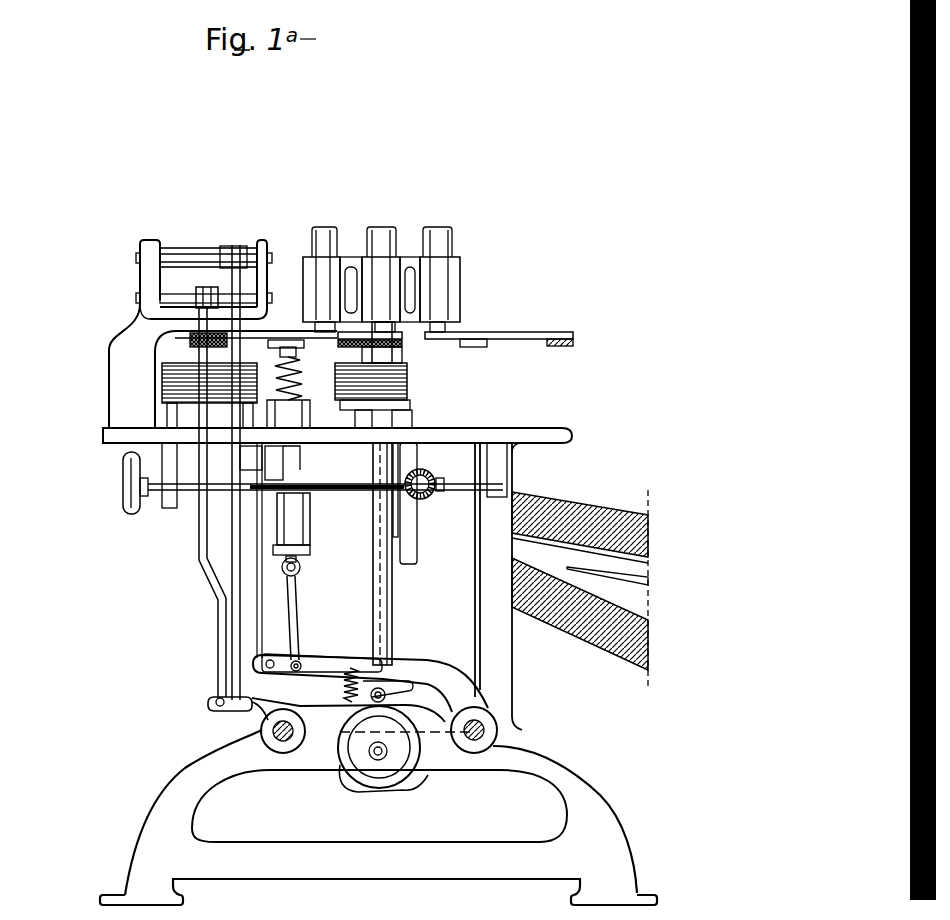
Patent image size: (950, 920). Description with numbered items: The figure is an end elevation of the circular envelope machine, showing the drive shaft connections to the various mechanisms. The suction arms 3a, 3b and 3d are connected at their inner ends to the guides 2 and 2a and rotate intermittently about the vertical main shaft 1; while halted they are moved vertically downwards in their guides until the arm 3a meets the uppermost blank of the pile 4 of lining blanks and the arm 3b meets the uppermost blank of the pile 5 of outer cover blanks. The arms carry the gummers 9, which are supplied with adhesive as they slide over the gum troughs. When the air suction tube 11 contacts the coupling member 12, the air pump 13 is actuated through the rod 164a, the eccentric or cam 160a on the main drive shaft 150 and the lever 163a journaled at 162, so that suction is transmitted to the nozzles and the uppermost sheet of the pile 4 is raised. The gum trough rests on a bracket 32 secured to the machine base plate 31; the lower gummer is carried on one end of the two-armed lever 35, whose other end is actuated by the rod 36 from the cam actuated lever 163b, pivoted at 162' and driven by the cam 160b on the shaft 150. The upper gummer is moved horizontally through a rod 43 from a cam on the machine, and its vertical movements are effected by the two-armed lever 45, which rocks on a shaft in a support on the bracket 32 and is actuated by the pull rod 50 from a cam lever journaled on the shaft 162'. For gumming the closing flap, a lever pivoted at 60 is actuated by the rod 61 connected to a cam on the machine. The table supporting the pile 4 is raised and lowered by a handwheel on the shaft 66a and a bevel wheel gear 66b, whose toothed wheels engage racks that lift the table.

The vertical main shaft 1 is at (393, 597).
The guide 2 is at (322, 329).
The guide 2a is at (324, 228).
The suction arm 3a is at (402, 338).
The suction arm 3b is at (262, 333).
The suction arm 3d is at (525, 325).
The pile of lining blanks 4 is at (410, 385).
The pile of outer cover blanks 5 is at (172, 366).
The gummer 9 is at (220, 346).
The air suction tube 11 is at (300, 346).
The coupling member 12 is at (275, 356).
The air pump 13 is at (300, 522).
The machine base plate 31 is at (105, 442).
The bracket 32 is at (110, 349).
The two-armed lever 35 is at (195, 290).
The rod 36 is at (200, 538).
The rod 43 is at (257, 527).
The two-armed lever 45 is at (238, 246).
The pull rod 50 is at (242, 605).
The pivot 60 is at (124, 468).
The rod 61 is at (314, 567).
The shaft 66a is at (357, 490).
The bevel wheel gear 66b is at (430, 494).
The main drive shaft 150 is at (388, 750).
The eccentric or cam 160a is at (360, 748).
The cam 160b is at (405, 786).
The journal 162 is at (512, 730).
The shaft 162' is at (240, 731).
The lever 163a is at (470, 695).
The cam actuated lever 163b is at (225, 698).
The rod 164a is at (296, 615).